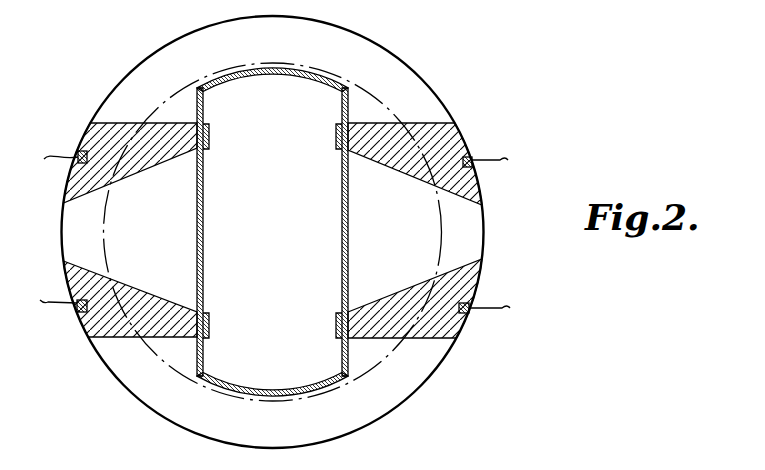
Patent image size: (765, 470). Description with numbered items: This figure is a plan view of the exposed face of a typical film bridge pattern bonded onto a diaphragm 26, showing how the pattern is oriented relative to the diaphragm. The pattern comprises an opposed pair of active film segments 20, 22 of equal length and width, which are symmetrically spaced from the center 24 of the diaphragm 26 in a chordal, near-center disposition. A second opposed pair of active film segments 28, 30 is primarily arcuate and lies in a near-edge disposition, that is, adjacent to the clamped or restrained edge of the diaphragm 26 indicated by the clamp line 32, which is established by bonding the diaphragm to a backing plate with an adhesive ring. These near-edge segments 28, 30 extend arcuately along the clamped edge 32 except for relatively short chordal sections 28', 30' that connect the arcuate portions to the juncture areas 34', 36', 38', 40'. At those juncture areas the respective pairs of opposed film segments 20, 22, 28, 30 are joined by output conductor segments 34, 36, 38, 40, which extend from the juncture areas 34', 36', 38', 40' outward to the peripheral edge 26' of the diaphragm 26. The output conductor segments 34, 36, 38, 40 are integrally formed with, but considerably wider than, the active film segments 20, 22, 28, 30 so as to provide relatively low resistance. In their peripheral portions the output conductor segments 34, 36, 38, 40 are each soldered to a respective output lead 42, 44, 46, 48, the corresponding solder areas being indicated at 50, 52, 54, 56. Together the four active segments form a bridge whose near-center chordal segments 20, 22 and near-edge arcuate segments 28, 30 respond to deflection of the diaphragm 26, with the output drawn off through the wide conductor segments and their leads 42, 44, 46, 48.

The active film segment 20 is at (197, 210).
The active film segment 22 is at (348, 224).
The center 24 is at (274, 235).
The diaphragm 26 is at (272, 232).
The peripheral edge 26' is at (273, 232).
The active film segment 28 is at (272, 87).
The chordal section 28' is at (272, 104).
The active film segment 30 is at (272, 377).
The chordal section 30' is at (272, 358).
The clamp line 32 is at (170, 92).
The output conductor segment 34 is at (415, 164).
The juncture area 34' is at (320, 133).
The output conductor segment 36 is at (415, 298).
The juncture area 36' is at (319, 325).
The output conductor segment 38 is at (130, 298).
The juncture area 38' is at (224, 323).
The output conductor segment 40 is at (130, 165).
The juncture area 40' is at (224, 136).
The output lead 42 is at (496, 160).
The output lead 44 is at (495, 308).
The output lead 46 is at (52, 304).
The output lead 48 is at (60, 157).
The solder area 50 is at (470, 158).
The solder area 52 is at (468, 311).
The solder area 54 is at (81, 312).
The solder area 56 is at (80, 152).